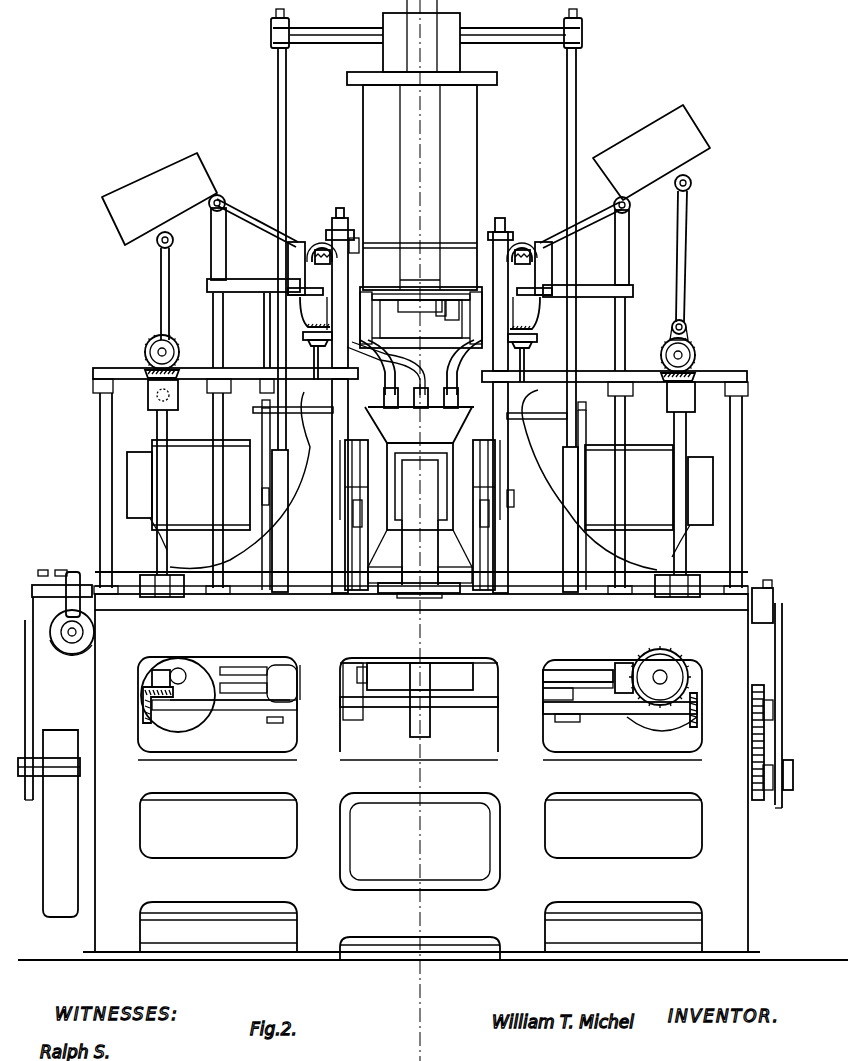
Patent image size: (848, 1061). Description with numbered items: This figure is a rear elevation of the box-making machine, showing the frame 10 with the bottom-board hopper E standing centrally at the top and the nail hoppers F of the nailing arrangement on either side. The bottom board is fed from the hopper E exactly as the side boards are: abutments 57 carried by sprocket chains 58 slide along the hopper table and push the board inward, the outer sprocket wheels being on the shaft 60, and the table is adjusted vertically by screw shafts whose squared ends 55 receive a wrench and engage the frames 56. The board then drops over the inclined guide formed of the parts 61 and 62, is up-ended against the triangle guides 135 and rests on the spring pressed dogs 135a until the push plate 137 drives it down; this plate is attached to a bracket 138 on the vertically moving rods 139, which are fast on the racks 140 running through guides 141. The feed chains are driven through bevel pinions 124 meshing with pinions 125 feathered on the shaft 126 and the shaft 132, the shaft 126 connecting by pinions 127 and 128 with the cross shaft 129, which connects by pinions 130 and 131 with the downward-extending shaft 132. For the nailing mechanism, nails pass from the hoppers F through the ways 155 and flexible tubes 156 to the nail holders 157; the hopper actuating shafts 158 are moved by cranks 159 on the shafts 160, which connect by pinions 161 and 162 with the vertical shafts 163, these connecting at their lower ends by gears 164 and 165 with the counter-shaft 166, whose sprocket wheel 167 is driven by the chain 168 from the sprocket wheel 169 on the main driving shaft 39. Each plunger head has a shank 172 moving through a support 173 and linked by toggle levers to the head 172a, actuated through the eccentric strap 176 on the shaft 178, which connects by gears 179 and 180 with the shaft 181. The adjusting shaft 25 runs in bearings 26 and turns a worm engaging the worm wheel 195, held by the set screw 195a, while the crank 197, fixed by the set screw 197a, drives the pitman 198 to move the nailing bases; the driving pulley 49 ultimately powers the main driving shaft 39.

The base frame 10 is at (190, 868).
The shaft 25 is at (80, 634).
The bearings 26 is at (90, 647).
The main driving shaft 39 is at (50, 770).
The driving pulley 49 is at (60, 823).
The squared ends 55 is at (340, 230).
The frames 56 is at (355, 230).
The abutments 57 is at (416, 300).
The sprocket chains 58 is at (383, 292).
The shaft 60 is at (452, 300).
The upper part of inclined guide 61 is at (446, 305).
The lower part of inclined guide 62 is at (414, 367).
The bevel pinions 124 is at (295, 296).
The pinions 125 is at (303, 336).
The shaft 126 is at (534, 348).
The pinion 127 is at (530, 250).
The pinion 128 is at (512, 240).
The cross shaft 129 is at (420, 278).
The pinion 130 is at (320, 248).
The pinion 131 is at (316, 250).
The shaft 132 is at (322, 430).
The triangle guides 135 is at (421, 317).
The spring pressed dogs 135a is at (468, 420).
The push plate 137 is at (448, 62).
The bracket 138 is at (318, 30).
The vertically moving rods 139 is at (284, 112).
The racks 140 is at (278, 548).
The guide 141 is at (288, 673).
The ways 155 is at (252, 213).
The flexible tubes 156 is at (330, 352).
The nail holders 157 is at (450, 400).
The hopper actuating shafts 158 is at (160, 298).
The cranks 159 is at (687, 328).
The shafts 160 is at (172, 342).
The pinion 161 is at (175, 360).
The pinion 162 is at (160, 383).
The vertical shafts 163 is at (167, 425).
The gear 164 is at (195, 718).
The gear 165 is at (152, 724).
The counter-shaft 166 is at (612, 716).
The sprocket wheel 167 is at (772, 690).
The chain 168 is at (766, 732).
The sprocket wheel 169 is at (773, 762).
The shank 172 is at (150, 460).
The head 172a is at (426, 514).
The support 173 is at (412, 485).
The eccentric strap 176 is at (430, 723).
The shaft 178 is at (572, 678).
The gear 179 is at (644, 668).
The gear 180 is at (660, 668).
The shaft 181 is at (660, 728).
The worm wheel 195 is at (80, 614).
The set screw 195a is at (60, 570).
The crank 197 is at (36, 640).
The set screw 197a is at (43, 570).
The pitman 198 is at (30, 712).
The hopper E is at (462, 153).
The nail hoppers F is at (406, 175).